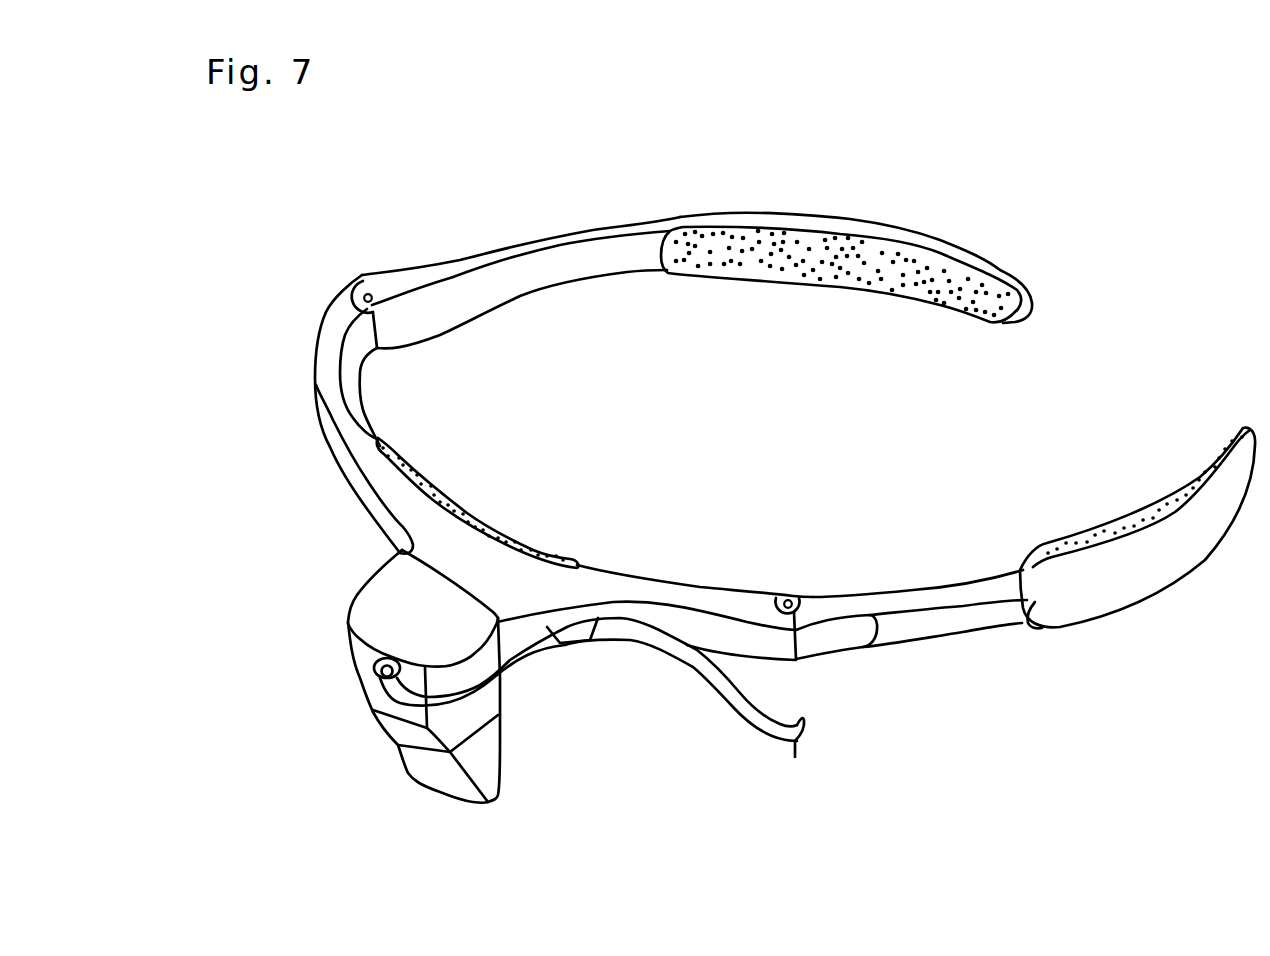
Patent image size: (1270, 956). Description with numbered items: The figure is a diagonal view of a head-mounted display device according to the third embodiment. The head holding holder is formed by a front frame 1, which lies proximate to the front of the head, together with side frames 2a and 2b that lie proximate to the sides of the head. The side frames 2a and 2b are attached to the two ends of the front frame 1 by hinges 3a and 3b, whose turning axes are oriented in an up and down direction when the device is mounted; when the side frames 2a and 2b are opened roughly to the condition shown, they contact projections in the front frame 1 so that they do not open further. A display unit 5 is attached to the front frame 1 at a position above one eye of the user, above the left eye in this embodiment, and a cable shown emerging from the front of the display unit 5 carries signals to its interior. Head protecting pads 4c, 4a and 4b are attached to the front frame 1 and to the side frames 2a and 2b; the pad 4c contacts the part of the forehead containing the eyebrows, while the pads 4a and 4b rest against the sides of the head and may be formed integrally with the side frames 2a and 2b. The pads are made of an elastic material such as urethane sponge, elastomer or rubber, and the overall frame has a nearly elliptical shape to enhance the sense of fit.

The front frame 1 is at (348, 469).
The side frame 2a is at (567, 227).
The side frame 2b is at (941, 579).
The hinge 3a is at (374, 288).
The hinge 3b is at (790, 592).
The pad 4a is at (788, 291).
The pad 4b is at (1128, 507).
The pad 4c is at (471, 508).
The display unit 5 is at (340, 678).